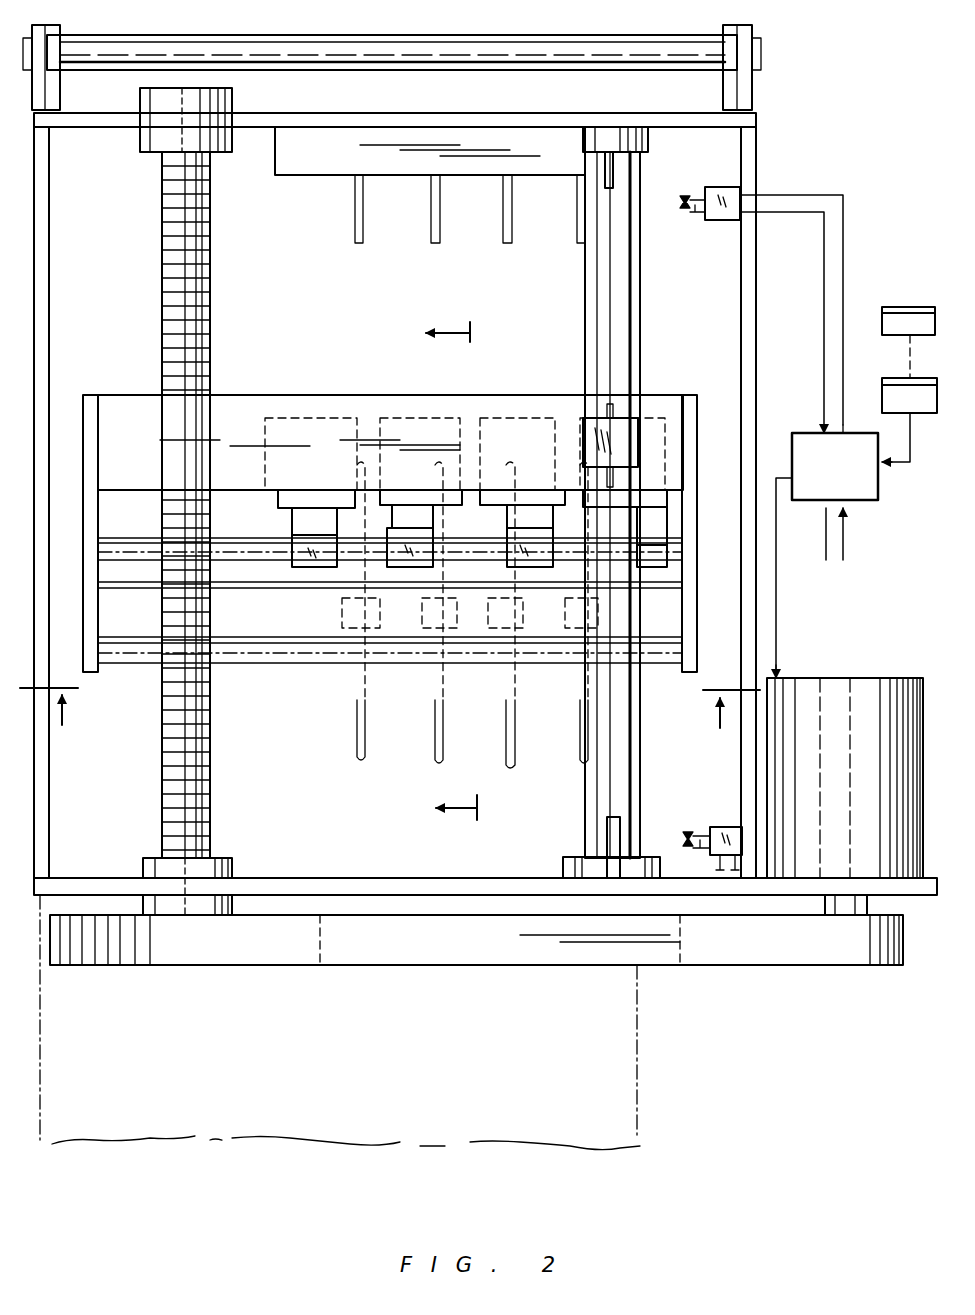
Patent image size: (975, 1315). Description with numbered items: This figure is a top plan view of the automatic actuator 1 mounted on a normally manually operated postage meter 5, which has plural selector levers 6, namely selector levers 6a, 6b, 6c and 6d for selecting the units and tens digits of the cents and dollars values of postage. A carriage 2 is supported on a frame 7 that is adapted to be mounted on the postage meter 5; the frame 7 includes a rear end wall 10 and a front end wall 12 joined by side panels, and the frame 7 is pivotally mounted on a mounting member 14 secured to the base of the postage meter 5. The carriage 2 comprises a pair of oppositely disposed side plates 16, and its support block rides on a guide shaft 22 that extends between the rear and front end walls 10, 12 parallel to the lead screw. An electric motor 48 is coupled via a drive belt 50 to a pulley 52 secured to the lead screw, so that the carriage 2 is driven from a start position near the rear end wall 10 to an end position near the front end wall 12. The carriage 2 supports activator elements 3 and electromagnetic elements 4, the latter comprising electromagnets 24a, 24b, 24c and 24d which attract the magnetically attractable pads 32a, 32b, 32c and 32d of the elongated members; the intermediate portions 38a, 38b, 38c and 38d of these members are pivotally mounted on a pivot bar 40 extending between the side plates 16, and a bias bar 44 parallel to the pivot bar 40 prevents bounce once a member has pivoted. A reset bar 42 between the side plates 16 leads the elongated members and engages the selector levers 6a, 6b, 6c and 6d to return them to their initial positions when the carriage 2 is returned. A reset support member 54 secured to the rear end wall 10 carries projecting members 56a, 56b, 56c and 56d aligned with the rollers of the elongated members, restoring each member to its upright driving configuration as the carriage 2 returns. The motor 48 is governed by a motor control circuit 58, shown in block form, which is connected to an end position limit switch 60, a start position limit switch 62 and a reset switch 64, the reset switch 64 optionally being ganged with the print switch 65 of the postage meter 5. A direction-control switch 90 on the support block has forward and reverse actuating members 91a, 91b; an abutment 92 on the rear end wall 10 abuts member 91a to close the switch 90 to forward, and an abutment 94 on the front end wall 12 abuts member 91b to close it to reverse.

The automatic actuator 1 is at (900, 242).
The carriage 2 is at (660, 328).
The activator elements 3 is at (390, 728).
The electromagnetic elements 4 is at (432, 570).
The postage meter 5 is at (312, 822).
The selector levers 6 is at (325, 617).
The frame 7 is at (52, 236).
The rear end wall 10 is at (258, 118).
The front end wall 12 is at (318, 875).
The mounting member 14 is at (262, 45).
The side plates 16 is at (85, 430).
The guide shaft 22 is at (628, 755).
The electromagnet 24a is at (572, 395).
The electromagnet 24b is at (510, 395).
The electromagnet 24c is at (448, 410).
The electromagnet 24d is at (300, 420).
The magnetically attractable pad 32a is at (650, 518).
The magnetically attractable pad 32b is at (535, 515).
The magnetically attractable pad 32c is at (412, 515).
The magnetically attractable pad 32d is at (292, 520).
The intermediate portion 38a is at (648, 558).
The intermediate portion 38b is at (515, 548).
The intermediate portion 38c is at (395, 548).
The intermediate portion 38d is at (295, 548).
The pivot bar 40 is at (138, 545).
The reset bar 42 is at (255, 655).
The bias bar 44 is at (130, 578).
The electric motor 48 is at (830, 688).
The drive belt 50 is at (690, 970).
The pulley 52 is at (175, 970).
The reset support member 54 is at (275, 165).
The projecting member 56a is at (577, 225).
The projecting member 56b is at (503, 222).
The projecting member 56c is at (431, 222).
The projecting member 56d is at (355, 225).
The motor control circuit 58 is at (792, 440).
The end position limit switch 60 is at (712, 852).
The start position limit switch 62 is at (722, 218).
The reset switch 64 is at (920, 415).
The print switch 65 is at (905, 305).
The selector lever 6a is at (580, 615).
The selector lever 6b is at (505, 615).
The selector lever 6c is at (438, 615).
The selector lever 6d is at (358, 615).
The direction-control switch 90 is at (612, 432).
The forward actuating member 91a is at (612, 405).
The reverse actuating member 91b is at (615, 480).
The abutment 92 is at (613, 172).
The abutment 94 is at (613, 835).